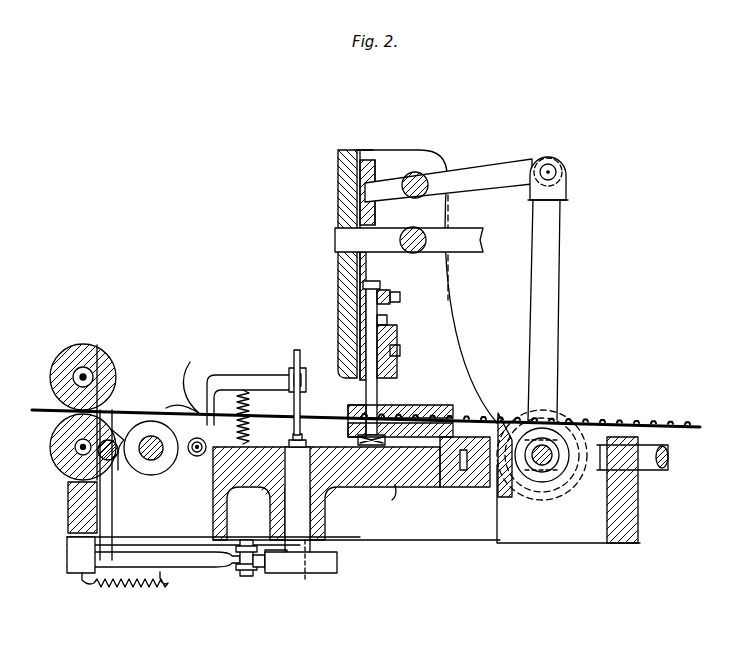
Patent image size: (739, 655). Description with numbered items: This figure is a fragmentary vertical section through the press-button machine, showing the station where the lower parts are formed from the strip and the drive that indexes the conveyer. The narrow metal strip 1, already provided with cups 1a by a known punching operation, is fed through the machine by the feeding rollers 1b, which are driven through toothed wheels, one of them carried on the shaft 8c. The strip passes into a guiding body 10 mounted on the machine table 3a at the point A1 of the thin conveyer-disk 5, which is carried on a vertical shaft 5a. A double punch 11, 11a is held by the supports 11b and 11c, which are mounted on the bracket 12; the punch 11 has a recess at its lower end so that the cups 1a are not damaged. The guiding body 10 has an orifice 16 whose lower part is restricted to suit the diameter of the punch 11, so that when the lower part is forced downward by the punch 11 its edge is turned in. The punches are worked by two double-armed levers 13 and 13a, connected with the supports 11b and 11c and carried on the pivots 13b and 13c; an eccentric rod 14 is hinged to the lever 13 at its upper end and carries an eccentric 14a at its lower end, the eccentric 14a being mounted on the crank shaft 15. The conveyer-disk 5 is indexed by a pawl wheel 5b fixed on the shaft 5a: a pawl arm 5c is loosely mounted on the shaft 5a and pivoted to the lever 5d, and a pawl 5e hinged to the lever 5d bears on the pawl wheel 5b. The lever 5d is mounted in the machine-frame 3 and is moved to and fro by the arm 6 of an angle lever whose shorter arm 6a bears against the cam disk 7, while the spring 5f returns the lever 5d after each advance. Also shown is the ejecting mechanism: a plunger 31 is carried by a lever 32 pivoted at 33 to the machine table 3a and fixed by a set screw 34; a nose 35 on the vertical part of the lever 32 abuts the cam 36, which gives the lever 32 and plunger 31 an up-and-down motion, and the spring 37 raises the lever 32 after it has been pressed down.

The narrow metal strip 1 is at (44, 412).
The cups 1a is at (624, 423).
The feeding rollers 1b is at (86, 345).
The machine-frame 3 is at (636, 502).
The machine table 3a is at (448, 488).
The conveyer-disk 5 is at (336, 447).
The vertical shaft 5a is at (310, 503).
The pawl wheel 5b is at (338, 561).
The pawl arm 5c is at (250, 540).
The lever 5d is at (208, 560).
The pawl 5e is at (258, 568).
The spring 5f is at (115, 586).
The arm of angle lever 6 is at (112, 518).
The shorter arm of angle lever 6a is at (140, 424).
The cam disk 7 is at (122, 468).
The shaft 8c is at (98, 452).
The guiding body 10 is at (410, 405).
The punch 11 is at (340, 312).
The punch 11a is at (386, 322).
The support 11b is at (368, 160).
The support 11c is at (360, 182).
The bracket 12 is at (444, 166).
The double-armed lever 13 is at (482, 190).
The double-armed lever 13a is at (474, 252).
The pivot 13b is at (420, 178).
The pivot 13c is at (411, 253).
The eccentric rod 14 is at (548, 333).
The eccentric 14a is at (538, 480).
The crank shaft 15 is at (556, 425).
The orifice 16 is at (352, 407).
The plunger 31 is at (303, 382).
The lever 32 is at (262, 375).
The pivot 33 is at (196, 458).
The set screw 34 is at (306, 380).
The projection or nose 35 is at (194, 378).
The cam 36 is at (175, 403).
The spring 37 is at (249, 404).
The point of conveyer disk A1 is at (406, 496).